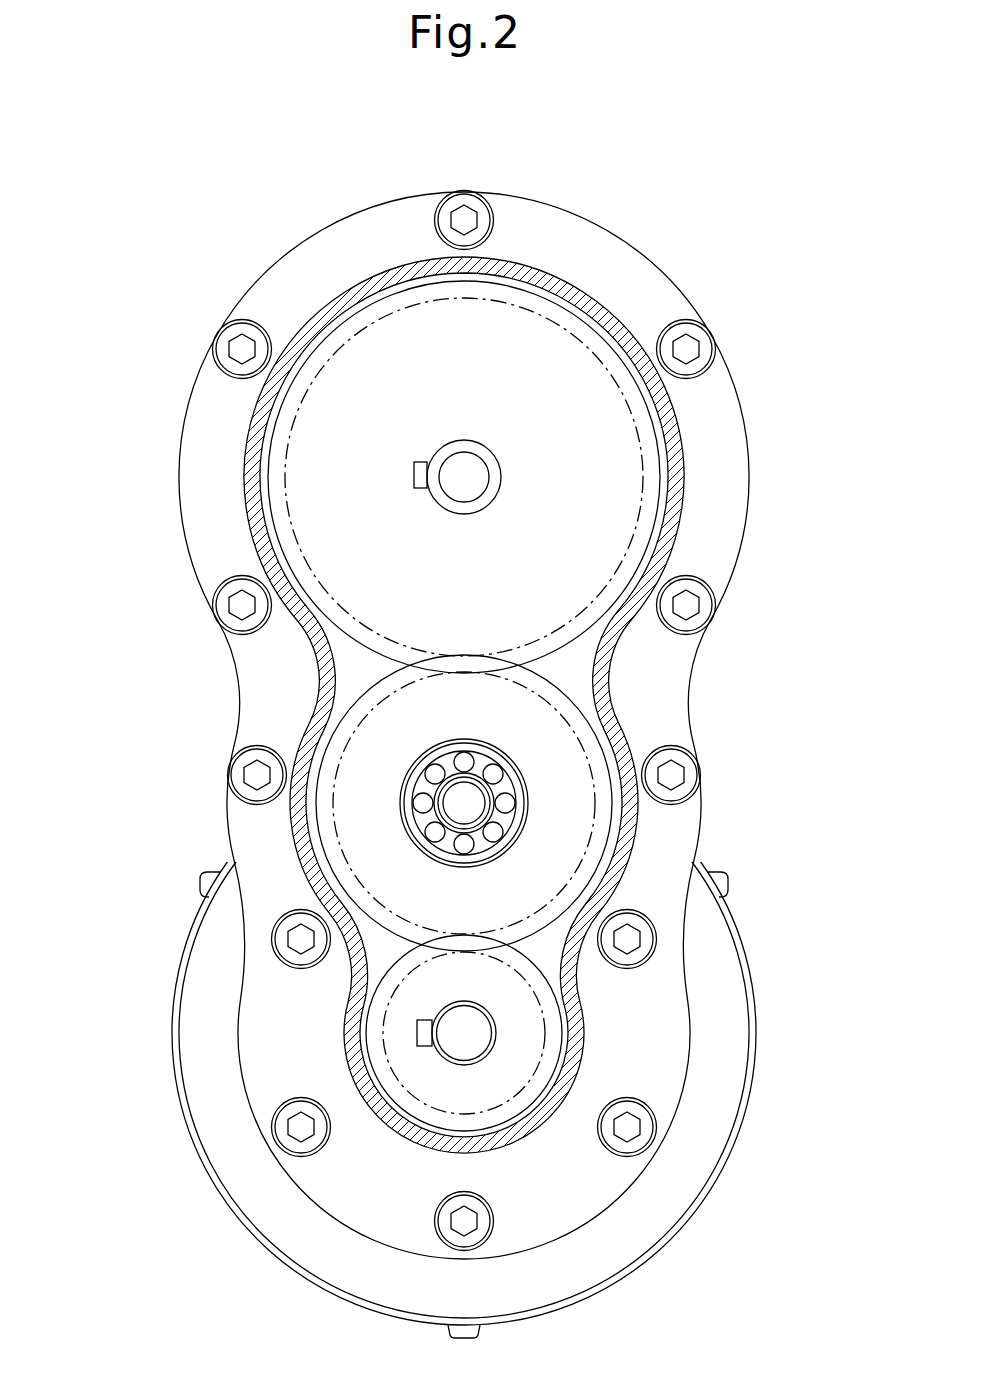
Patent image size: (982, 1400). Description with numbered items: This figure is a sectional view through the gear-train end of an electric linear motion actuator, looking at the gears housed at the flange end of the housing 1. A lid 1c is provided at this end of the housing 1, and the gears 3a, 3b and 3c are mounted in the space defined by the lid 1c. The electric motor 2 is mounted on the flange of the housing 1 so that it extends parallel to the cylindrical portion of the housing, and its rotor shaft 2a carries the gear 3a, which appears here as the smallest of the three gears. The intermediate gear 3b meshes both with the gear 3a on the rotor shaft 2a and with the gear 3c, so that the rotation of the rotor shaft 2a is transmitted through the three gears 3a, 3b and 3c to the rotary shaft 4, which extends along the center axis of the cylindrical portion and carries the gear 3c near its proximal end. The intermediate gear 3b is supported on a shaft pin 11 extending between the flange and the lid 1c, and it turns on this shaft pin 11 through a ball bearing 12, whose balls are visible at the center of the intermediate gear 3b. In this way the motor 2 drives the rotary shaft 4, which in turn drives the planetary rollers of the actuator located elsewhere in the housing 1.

The housing 1 is at (337, 218).
The lid 1c is at (635, 1050).
The electric motor 2 is at (292, 1222).
The rotor shaft 2a is at (465, 1047).
The gear 3a is at (377, 1015).
The intermediate gear 3b is at (345, 728).
The gear 3c is at (283, 428).
The rotary shaft 4 is at (462, 457).
The shaft pin 11 is at (458, 805).
The ball bearing 12 is at (427, 832).